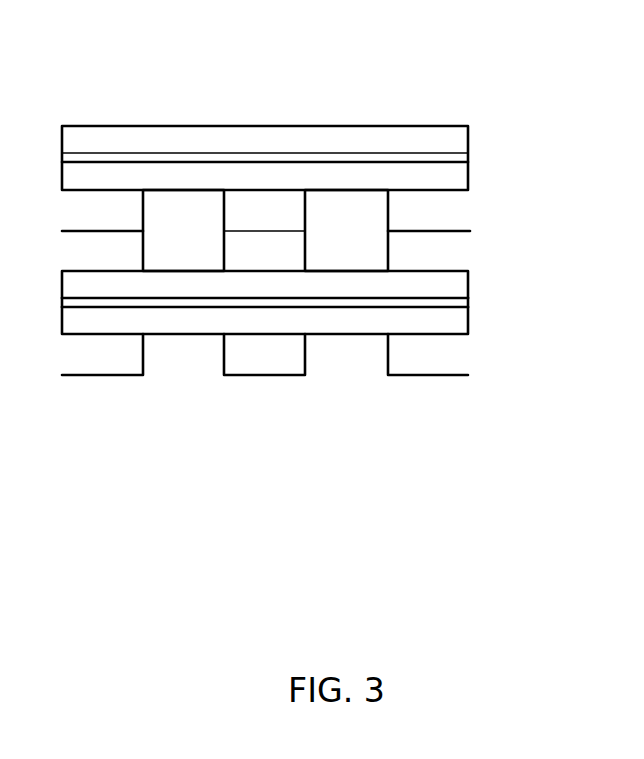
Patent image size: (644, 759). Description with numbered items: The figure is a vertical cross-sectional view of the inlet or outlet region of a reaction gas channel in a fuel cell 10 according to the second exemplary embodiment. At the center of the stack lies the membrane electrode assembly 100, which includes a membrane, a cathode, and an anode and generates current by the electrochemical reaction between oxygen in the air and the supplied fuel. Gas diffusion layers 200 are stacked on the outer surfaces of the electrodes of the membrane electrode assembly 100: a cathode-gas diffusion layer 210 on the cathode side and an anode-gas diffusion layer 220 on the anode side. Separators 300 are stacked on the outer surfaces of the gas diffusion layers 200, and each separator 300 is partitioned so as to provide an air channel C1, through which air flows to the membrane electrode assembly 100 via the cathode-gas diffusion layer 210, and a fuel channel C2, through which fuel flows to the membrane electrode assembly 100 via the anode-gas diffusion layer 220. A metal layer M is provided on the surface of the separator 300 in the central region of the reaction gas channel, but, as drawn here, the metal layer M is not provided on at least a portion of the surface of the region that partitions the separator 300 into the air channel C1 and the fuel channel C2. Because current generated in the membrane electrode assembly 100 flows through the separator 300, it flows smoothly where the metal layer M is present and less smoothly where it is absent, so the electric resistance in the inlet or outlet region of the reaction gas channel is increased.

The fuel cell 10 is at (413, 61).
The separator 300 is at (471, 231).
The metal layer M is at (143, 253).
The fuel channel C2 is at (260, 209).
The air channel C1 is at (261, 252).
The gas diffusion layer 200 is at (538, 430).
The cathode-gas diffusion layer 210 is at (462, 283).
The anode-gas diffusion layer 220 is at (462, 322).
The membrane electrode assembly 100 is at (463, 302).